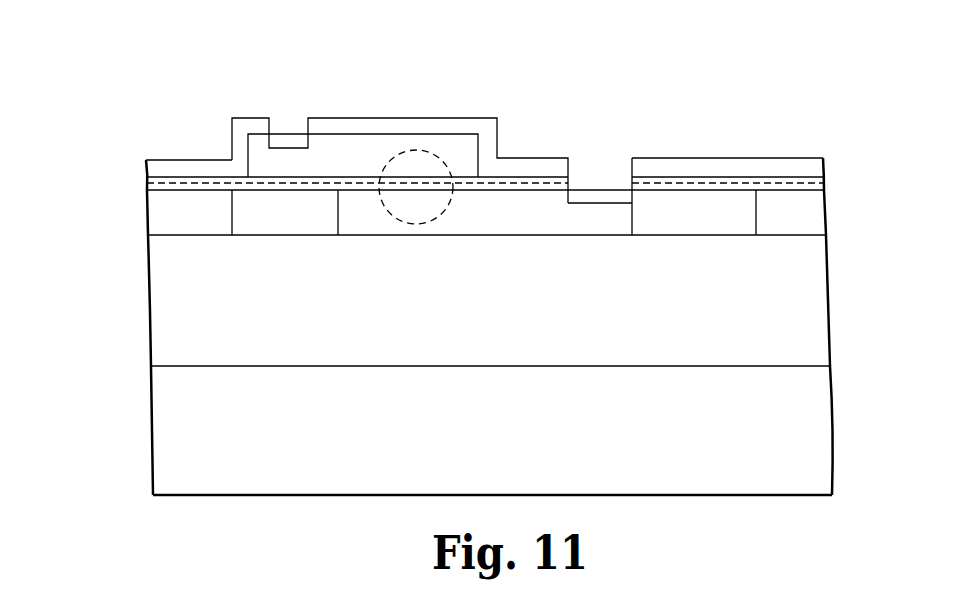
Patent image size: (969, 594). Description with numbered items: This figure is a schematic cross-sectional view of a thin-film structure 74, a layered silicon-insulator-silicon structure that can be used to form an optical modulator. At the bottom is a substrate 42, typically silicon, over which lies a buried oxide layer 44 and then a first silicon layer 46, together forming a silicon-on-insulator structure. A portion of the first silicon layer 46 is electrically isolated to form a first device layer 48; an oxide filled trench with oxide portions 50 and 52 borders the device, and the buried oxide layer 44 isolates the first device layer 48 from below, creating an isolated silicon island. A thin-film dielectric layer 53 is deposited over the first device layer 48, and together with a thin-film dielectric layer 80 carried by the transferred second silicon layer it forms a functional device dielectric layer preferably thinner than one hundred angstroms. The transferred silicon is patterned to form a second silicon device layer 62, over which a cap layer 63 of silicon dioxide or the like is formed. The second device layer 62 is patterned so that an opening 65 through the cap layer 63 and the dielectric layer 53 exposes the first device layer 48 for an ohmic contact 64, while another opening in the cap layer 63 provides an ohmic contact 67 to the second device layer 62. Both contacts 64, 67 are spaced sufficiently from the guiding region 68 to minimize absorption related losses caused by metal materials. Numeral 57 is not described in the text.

The substrate 42 is at (782, 437).
The buried oxide layer 44 is at (810, 288).
The first silicon layer 46 is at (167, 216).
The first device layer 48 is at (528, 220).
The oxide portion 50 is at (285, 217).
The oxide portion 52 is at (158, 190).
The thin-film dielectric layer 53 is at (798, 188).
The gate electrode 57 is at (287, 133).
The second silicon device layer 62 is at (330, 140).
The cap layer 63 is at (183, 172).
The contact 64 is at (595, 196).
The opening 65 is at (578, 167).
The contact 67 is at (278, 122).
The guiding region 68 is at (422, 150).
The thin-film structure 74 is at (130, 412).
The thin-film dielectric layer 80 is at (162, 172).